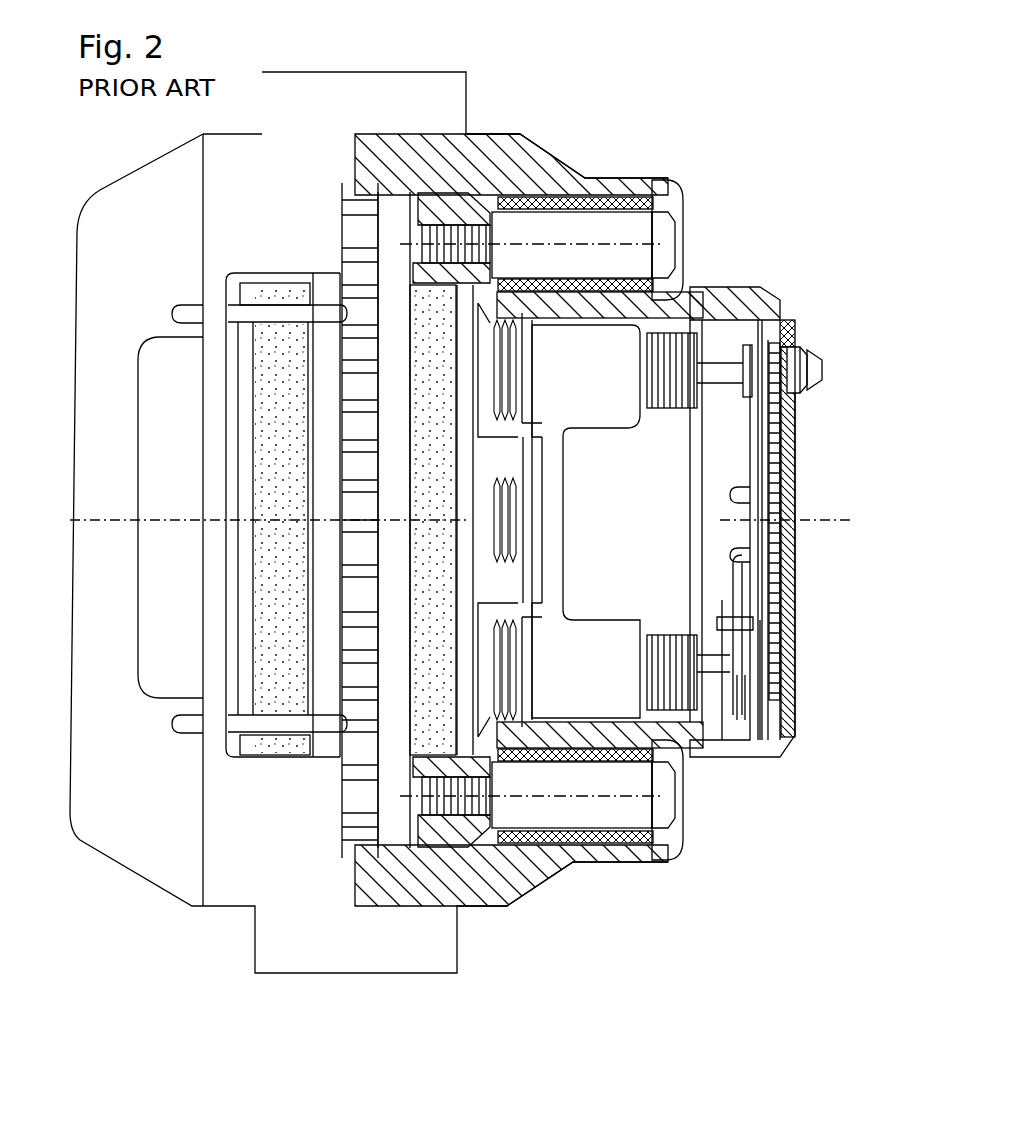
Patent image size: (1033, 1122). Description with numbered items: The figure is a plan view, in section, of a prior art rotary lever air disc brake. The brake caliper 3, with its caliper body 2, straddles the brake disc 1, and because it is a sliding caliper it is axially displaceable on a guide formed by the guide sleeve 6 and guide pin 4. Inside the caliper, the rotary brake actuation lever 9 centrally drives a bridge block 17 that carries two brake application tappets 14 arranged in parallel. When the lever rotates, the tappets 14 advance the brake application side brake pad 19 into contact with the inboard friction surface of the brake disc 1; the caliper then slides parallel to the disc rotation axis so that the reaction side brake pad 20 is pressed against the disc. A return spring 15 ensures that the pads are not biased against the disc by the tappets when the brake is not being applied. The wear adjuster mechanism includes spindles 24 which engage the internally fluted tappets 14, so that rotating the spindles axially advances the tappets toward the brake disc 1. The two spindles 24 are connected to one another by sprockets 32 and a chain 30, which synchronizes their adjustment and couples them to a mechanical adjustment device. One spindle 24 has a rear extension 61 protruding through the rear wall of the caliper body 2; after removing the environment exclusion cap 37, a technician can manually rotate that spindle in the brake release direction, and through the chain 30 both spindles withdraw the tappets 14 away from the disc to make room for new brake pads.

The brake disc 1 is at (390, 205).
The caliper body 2 is at (613, 178).
The brake caliper 3 is at (553, 118).
The guide pin 4 is at (615, 812).
The guide sleeve 6 is at (580, 847).
The rotary brake actuation lever 9 is at (798, 524).
The brake actuation tappets 14 is at (690, 335).
The return spring 15 is at (247, 520).
The bridge block 17 is at (638, 530).
The brake application side brake pad 19 is at (428, 728).
The reaction side brake pad 20 is at (278, 393).
The spindles 24 is at (693, 727).
The chain 30 is at (785, 453).
The sprockets 32 is at (780, 347).
The environment exclusion cap 37 is at (822, 370).
The rear extension 61 is at (805, 353).